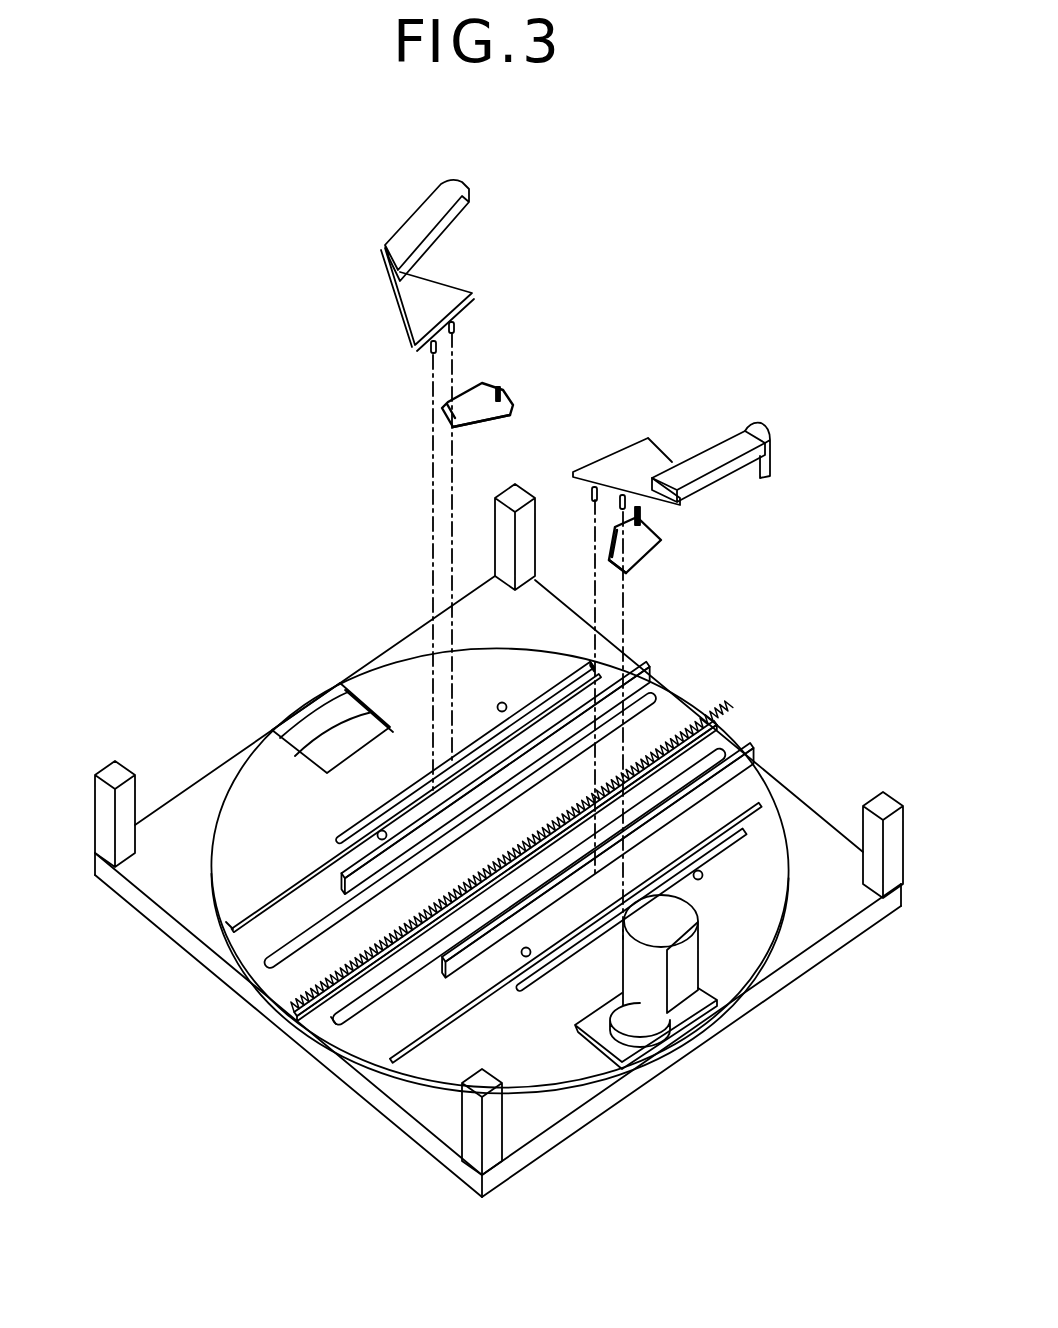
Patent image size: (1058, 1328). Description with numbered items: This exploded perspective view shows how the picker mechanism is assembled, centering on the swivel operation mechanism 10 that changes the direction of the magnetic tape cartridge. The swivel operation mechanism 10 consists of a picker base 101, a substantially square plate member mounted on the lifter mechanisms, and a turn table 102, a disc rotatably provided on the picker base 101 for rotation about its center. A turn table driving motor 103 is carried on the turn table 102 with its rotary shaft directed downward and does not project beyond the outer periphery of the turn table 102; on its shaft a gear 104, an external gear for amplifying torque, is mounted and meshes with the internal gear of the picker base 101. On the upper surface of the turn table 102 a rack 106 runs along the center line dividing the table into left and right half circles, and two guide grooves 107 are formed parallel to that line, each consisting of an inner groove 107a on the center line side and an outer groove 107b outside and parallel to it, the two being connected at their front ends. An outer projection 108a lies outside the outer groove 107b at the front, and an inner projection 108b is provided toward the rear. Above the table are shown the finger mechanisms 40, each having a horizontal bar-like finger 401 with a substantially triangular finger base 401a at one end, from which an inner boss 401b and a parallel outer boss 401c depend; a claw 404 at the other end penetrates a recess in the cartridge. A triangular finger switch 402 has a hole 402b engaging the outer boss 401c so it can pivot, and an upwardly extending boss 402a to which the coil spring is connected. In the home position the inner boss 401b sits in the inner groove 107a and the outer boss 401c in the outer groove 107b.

The swivel operation mechanism 10 is at (499, 842).
The picker base 101 is at (527, 1122).
The turn table 102 is at (230, 882).
The turn table driving motor 103 is at (680, 992).
The gear 104 is at (655, 1060).
The rack 106 is at (714, 712).
The guide groove 107 is at (298, 862).
The inner groove 107a is at (724, 790).
The outer groove 107b is at (760, 806).
The outer projection 108a is at (498, 703).
The inner projection 108b is at (230, 887).
The finger mechanism 40 is at (583, 395).
The finger 401 is at (410, 205).
The finger base 401a is at (398, 312).
The inner boss 401b is at (430, 352).
The outer boss 401c is at (458, 322).
The finger switch 402 is at (512, 392).
The boss 402a is at (498, 387).
The hole 402b is at (484, 424).
The claw 404 is at (748, 424).